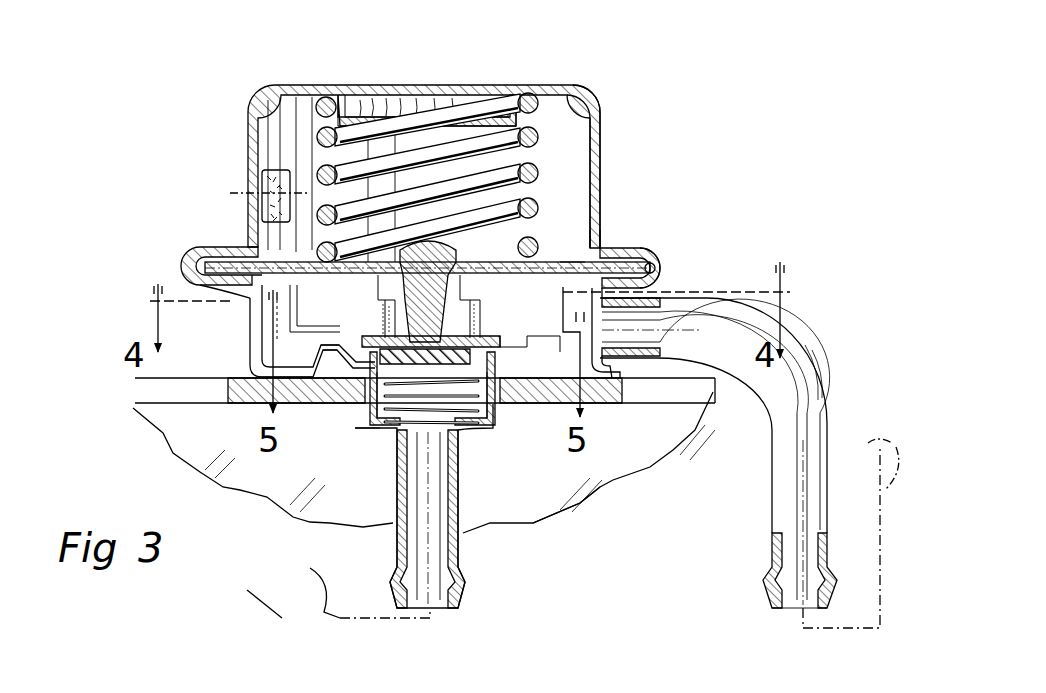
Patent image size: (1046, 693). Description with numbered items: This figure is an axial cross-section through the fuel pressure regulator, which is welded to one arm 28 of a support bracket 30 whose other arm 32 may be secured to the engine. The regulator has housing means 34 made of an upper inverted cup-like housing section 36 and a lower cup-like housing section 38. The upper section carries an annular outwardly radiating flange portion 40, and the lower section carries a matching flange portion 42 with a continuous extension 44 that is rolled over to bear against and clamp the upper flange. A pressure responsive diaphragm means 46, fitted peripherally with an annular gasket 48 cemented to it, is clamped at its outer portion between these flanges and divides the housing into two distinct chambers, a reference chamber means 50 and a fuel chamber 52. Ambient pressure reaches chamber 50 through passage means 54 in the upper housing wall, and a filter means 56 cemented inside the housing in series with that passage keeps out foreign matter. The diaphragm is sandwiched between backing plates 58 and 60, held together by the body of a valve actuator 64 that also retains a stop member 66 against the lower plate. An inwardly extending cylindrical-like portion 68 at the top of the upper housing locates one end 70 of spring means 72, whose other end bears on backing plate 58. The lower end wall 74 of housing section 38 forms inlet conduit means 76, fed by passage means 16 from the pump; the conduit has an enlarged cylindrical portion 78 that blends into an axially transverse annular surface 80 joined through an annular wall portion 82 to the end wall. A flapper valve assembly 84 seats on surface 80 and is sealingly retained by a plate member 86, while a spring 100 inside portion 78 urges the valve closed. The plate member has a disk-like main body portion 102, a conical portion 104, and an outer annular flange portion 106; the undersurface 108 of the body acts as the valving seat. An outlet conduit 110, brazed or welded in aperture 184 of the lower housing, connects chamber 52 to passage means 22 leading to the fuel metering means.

The passage means 16 is at (338, 586).
The passage means 22 is at (862, 525).
The arm of support bracket 28 is at (612, 135).
The support bracket 30 is at (655, 472).
The other arm of support bracket 32 is at (600, 488).
The housing means 34 is at (608, 165).
The upper housing section 36 is at (250, 114).
The lower housing section 38 is at (257, 333).
The flange portion of upper housing section 40 is at (645, 250).
The flange portion of lower housing section 42 is at (612, 290).
The extension 44 is at (603, 250).
The diaphragm means 46 is at (574, 262).
The annular gasket 48 is at (652, 262).
The chamber means 50 is at (603, 130).
The chamber 52 is at (280, 315).
The passage means 54 is at (240, 197).
The filter means 56 is at (280, 172).
The diaphragm backing plate 58 is at (306, 262).
The diaphragm backing plate 60 is at (250, 298).
The valve actuator 64 is at (448, 250).
The stop member 66 is at (488, 298).
The inwardly extending cylindrical-like portion 68 is at (382, 100).
The end of spring means 70 is at (331, 96).
The spring means 72 is at (545, 128).
The lower end wall 74 is at (317, 382).
The inlet conduit means 76 is at (393, 514).
The enlarged cylindrical portion 78 is at (370, 422).
The annular surface 80 is at (507, 404).
The annular wall portion 82 is at (335, 385).
The flapper valve assembly 84 is at (512, 405).
The plate member 86 is at (482, 332).
The spring 100 is at (460, 436).
The main body portion 102 is at (386, 346).
The conical portion 104 is at (316, 353).
The annular flange portion 106 is at (272, 388).
The undersurface 108 is at (279, 330).
The outlet conduit 110 is at (800, 350).
The aperture 184 is at (607, 348).